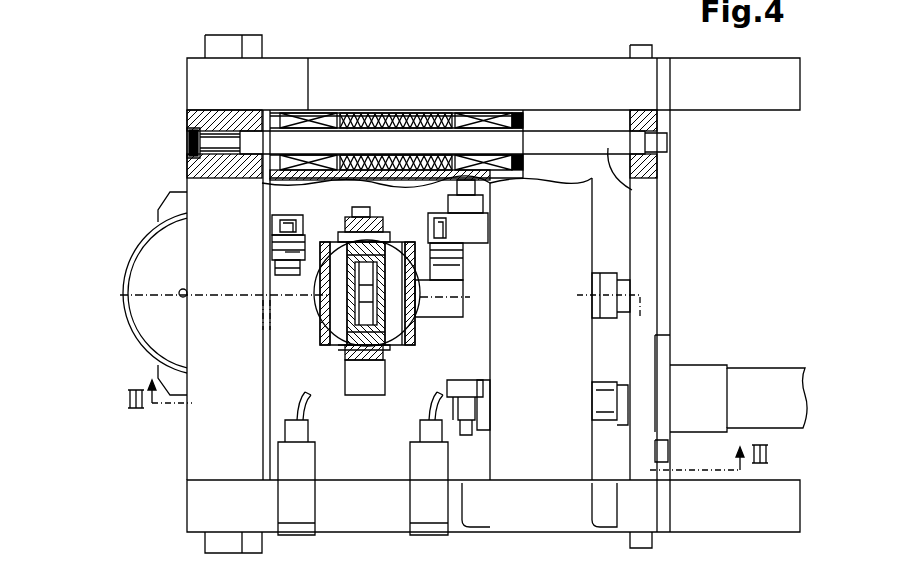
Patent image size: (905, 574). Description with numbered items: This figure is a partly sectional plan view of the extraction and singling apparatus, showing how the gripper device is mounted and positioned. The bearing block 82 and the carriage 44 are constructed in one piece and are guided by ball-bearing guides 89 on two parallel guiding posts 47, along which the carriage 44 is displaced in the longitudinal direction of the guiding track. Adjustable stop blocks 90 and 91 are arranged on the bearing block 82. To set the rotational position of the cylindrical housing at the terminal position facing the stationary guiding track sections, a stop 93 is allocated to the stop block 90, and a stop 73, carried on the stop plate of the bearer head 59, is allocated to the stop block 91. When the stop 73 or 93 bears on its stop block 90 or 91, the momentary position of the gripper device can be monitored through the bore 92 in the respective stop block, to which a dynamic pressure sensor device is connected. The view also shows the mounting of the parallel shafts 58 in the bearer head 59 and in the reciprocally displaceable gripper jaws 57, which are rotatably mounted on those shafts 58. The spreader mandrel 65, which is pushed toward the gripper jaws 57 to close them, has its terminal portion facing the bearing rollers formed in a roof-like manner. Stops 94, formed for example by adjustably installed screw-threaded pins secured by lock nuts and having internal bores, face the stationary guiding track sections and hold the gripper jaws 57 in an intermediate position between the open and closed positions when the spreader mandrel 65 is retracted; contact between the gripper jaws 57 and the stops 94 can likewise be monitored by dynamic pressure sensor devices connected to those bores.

The carriage 44 is at (510, 165).
The guiding posts 47 is at (650, 186).
The gripper jaws 57 is at (317, 265).
The shafts 58 is at (335, 345).
The bearer head 59 is at (345, 352).
The spreader mandrel 65 is at (363, 245).
The stop 73 is at (445, 298).
The bearing block 82 is at (312, 302).
The ball-bearing guides 89 is at (303, 112).
The stop block 90 is at (290, 250).
The stop block 91 is at (453, 255).
The bore 92 is at (257, 243).
The stop 93 is at (363, 382).
The stops 94 is at (490, 243).